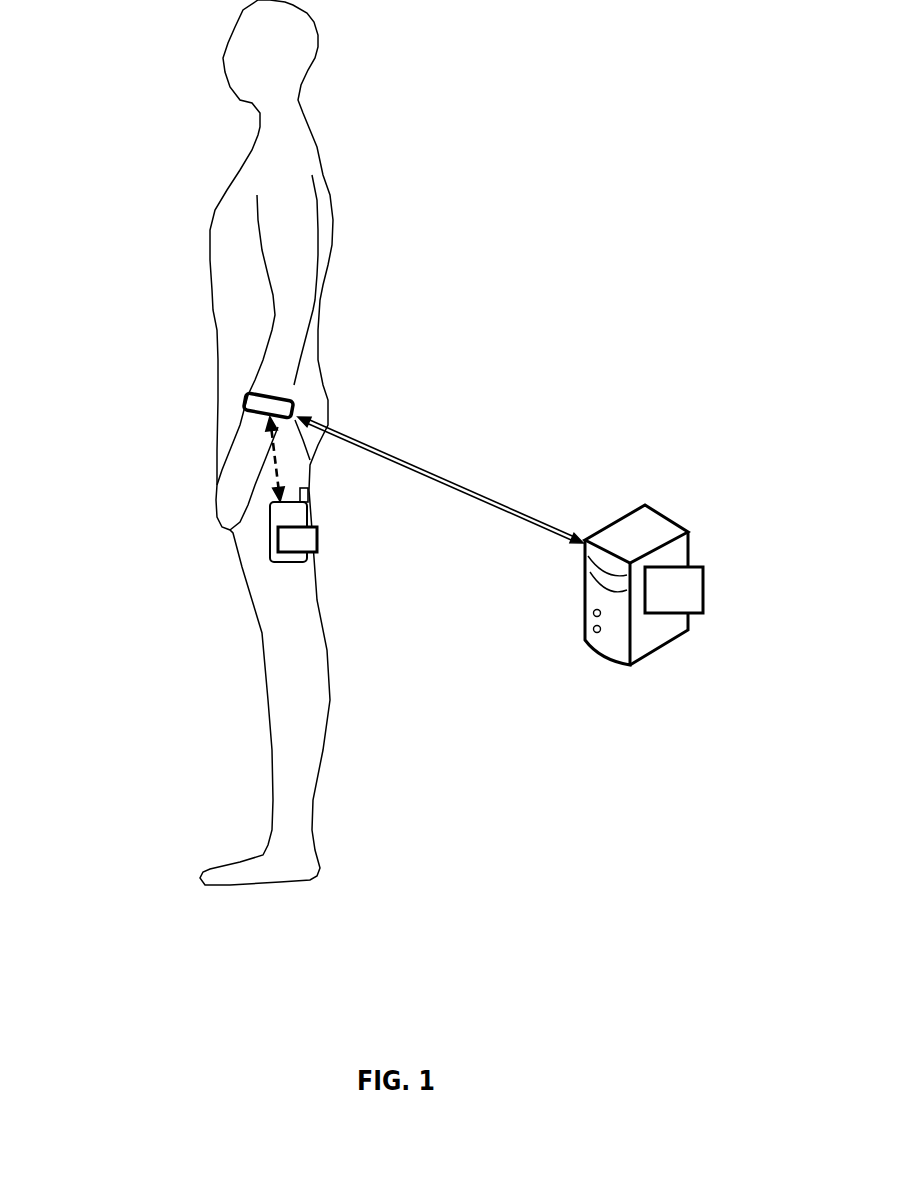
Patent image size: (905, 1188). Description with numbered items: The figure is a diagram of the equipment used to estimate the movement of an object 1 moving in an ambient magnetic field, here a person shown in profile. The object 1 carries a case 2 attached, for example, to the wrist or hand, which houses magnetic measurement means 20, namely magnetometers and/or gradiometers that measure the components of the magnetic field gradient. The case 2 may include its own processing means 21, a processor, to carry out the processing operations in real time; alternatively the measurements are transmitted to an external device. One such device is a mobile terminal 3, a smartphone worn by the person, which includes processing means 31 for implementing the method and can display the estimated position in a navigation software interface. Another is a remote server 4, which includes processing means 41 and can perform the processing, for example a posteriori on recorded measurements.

The object 1 is at (213, 266).
The case 2 is at (161, 379).
The magnetic measurement means 20 is at (161, 379).
The processing means 21 is at (250, 395).
The mobile terminal 3 is at (306, 557).
The processing means 31 is at (322, 542).
The remote server 4 is at (701, 540).
The processing means 41 is at (703, 593).